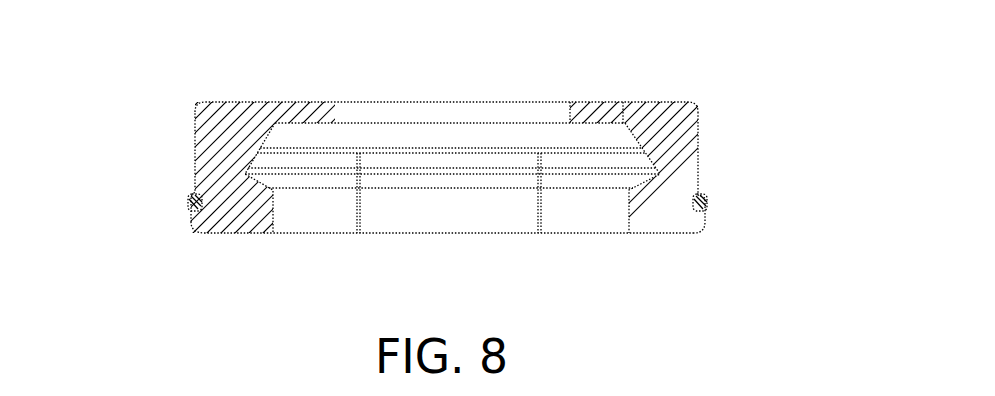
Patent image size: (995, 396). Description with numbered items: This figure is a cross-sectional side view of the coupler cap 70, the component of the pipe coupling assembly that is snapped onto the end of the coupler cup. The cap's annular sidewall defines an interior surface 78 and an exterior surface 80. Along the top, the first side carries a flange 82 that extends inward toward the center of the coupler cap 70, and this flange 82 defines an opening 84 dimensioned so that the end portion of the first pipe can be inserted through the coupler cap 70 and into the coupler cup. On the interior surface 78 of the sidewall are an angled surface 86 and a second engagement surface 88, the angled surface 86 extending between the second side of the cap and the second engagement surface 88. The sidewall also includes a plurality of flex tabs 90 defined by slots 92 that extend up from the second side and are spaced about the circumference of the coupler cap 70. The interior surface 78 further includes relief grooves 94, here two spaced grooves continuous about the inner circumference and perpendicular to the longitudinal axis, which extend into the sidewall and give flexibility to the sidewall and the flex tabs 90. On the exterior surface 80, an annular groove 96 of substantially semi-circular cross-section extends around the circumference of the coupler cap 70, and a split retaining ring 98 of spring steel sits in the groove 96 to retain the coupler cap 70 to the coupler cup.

The coupler cap 70 is at (661, 89).
The interior surface 78 is at (625, 131).
The exterior surface 80 is at (698, 146).
The flange 82 is at (328, 115).
The opening 84 is at (425, 117).
The angled surface 86 is at (266, 212).
The second engagement surface 88 is at (273, 190).
The flex tabs 90 is at (457, 233).
The slots 92 is at (358, 203).
The relief grooves 94 is at (249, 173).
The annular groove 96 is at (188, 209).
The retaining ring 98 is at (705, 199).